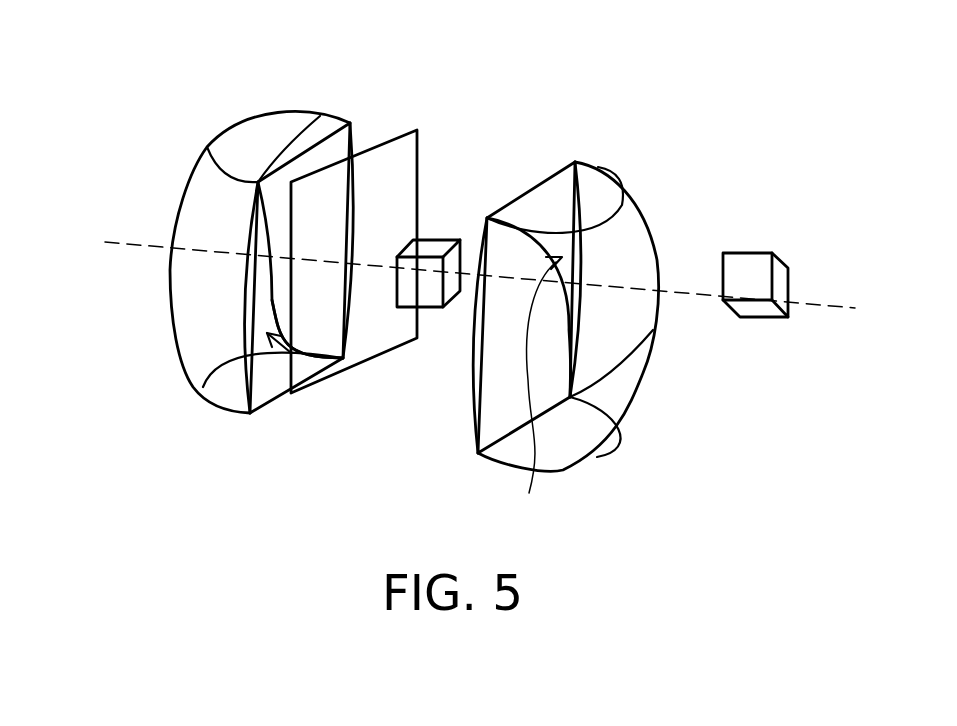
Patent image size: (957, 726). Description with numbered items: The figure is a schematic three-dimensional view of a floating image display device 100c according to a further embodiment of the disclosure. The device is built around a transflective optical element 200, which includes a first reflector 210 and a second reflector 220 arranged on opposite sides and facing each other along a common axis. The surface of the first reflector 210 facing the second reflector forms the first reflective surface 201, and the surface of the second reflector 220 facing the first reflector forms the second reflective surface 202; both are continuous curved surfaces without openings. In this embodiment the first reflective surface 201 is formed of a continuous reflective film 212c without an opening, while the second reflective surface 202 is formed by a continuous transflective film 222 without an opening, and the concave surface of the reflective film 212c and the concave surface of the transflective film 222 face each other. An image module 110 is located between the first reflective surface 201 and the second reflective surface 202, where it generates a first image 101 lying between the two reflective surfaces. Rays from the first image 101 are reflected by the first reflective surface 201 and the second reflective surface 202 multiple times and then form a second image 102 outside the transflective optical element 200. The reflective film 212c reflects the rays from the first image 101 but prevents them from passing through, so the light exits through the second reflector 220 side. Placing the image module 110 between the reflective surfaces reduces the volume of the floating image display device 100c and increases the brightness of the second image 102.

The floating image display device 100c is at (462, 290).
The transflective optical element 200 is at (364, 284).
The first reflector 210 is at (211, 258).
The reflective film 212c is at (265, 320).
The first reflective surface 201 is at (288, 350).
The second reflector 220 is at (565, 320).
The transflective film 222 is at (558, 247).
The second reflective surface 202 is at (529, 396).
The image module 110 is at (363, 357).
The first image 101 is at (433, 300).
The second image 102 is at (738, 260).